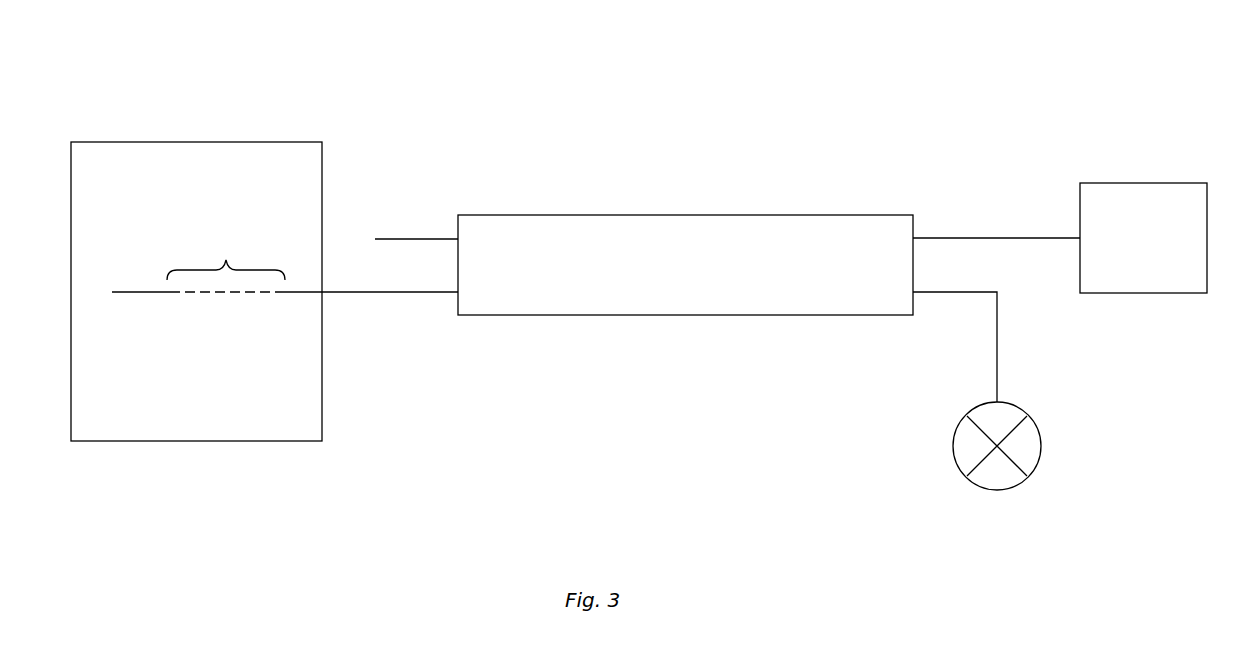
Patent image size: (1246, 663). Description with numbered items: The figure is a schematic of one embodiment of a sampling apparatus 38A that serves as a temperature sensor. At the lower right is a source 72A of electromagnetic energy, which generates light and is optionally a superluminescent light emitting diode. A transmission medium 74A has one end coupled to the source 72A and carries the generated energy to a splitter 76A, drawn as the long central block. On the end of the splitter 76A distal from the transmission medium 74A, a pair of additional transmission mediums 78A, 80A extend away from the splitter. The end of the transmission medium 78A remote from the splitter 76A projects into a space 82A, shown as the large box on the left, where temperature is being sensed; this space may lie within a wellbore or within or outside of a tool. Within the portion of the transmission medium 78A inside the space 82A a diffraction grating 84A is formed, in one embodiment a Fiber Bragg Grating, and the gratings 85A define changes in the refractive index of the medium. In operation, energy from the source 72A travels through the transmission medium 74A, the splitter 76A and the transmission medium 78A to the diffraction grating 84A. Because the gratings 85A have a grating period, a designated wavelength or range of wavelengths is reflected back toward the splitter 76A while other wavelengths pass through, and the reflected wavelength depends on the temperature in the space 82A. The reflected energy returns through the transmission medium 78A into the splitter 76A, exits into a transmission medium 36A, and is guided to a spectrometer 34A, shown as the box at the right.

The sampling apparatus 38A is at (917, 48).
The space 82A is at (197, 142).
The diffraction grating 84A is at (226, 256).
The gratings 85A is at (205, 293).
The transmission medium 78A is at (398, 293).
The transmission medium 80A is at (409, 238).
The splitter 76A is at (688, 214).
The transmission medium 36A is at (1005, 237).
The spectrometer 34A is at (1144, 183).
The transmission medium 74A is at (998, 351).
The source 72A is at (1041, 445).